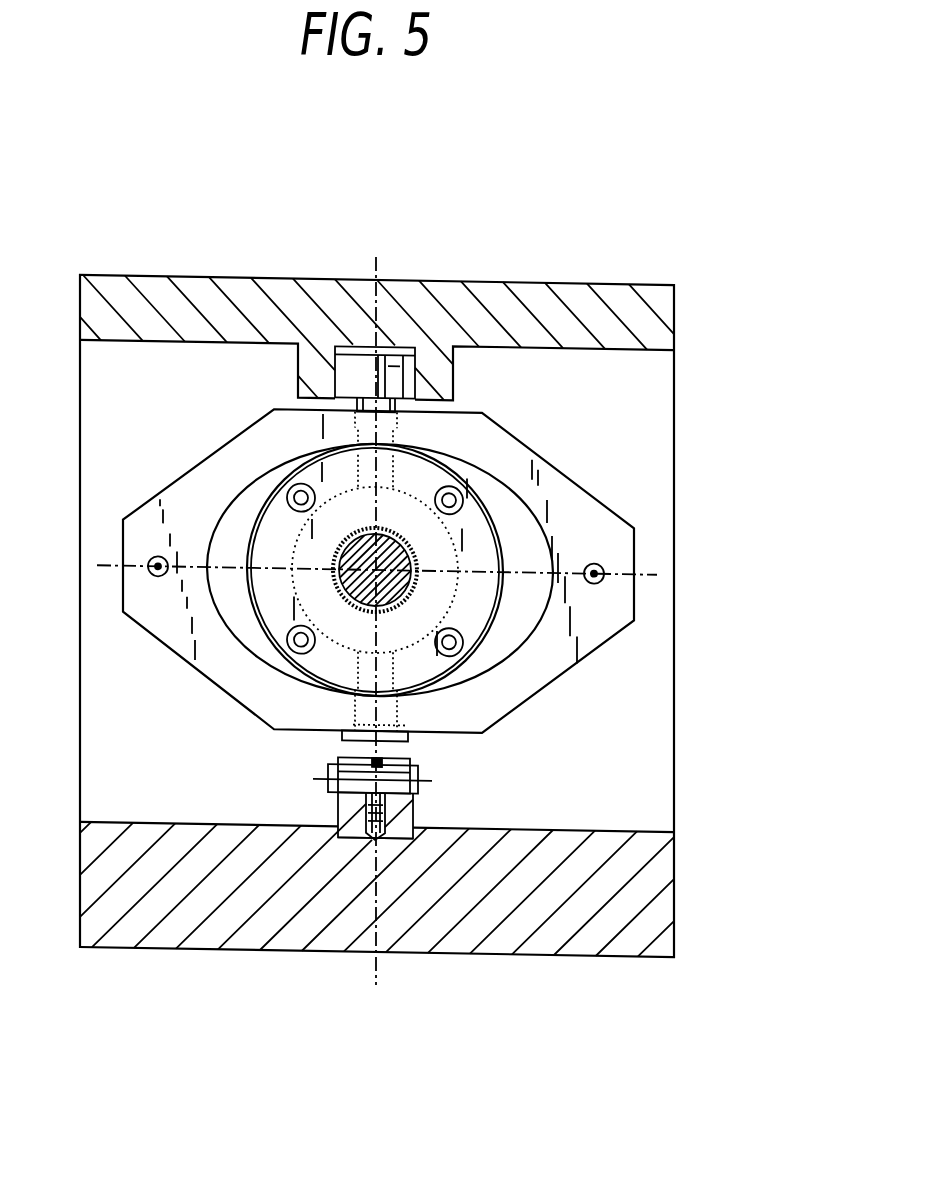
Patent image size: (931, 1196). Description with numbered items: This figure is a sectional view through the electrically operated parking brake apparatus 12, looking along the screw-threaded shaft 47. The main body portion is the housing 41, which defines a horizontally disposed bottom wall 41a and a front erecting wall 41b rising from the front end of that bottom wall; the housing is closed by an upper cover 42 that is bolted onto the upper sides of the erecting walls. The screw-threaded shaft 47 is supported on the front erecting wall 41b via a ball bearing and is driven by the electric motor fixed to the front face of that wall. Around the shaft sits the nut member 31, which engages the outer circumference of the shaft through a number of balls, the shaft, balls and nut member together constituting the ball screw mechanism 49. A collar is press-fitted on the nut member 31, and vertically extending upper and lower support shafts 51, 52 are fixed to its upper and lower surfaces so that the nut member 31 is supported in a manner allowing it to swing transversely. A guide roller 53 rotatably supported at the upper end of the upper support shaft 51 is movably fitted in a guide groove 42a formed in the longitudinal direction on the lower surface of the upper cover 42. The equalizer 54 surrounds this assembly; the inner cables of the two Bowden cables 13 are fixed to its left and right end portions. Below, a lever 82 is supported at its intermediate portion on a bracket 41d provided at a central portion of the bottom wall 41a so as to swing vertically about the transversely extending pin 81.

The electrically operated parking brake apparatus 12 is at (545, 255).
The Bowden cables 13 is at (598, 560).
The nut member 31 is at (270, 629).
The housing 41 is at (696, 847).
The bottom wall 41a is at (572, 922).
The front erecting wall 41b is at (648, 653).
The bracket 41d is at (350, 810).
The upper cover 42 is at (226, 262).
The guide groove 42a is at (348, 347).
The screw-threaded shaft 47 is at (420, 574).
The ball screw mechanism 49 is at (498, 515).
The upper support shaft 51 is at (347, 432).
The lower support shaft 52 is at (312, 738).
The guide roller 53 is at (395, 372).
The equalizer 54 is at (202, 468).
The pin 81 is at (330, 791).
The lever 82 is at (383, 760).